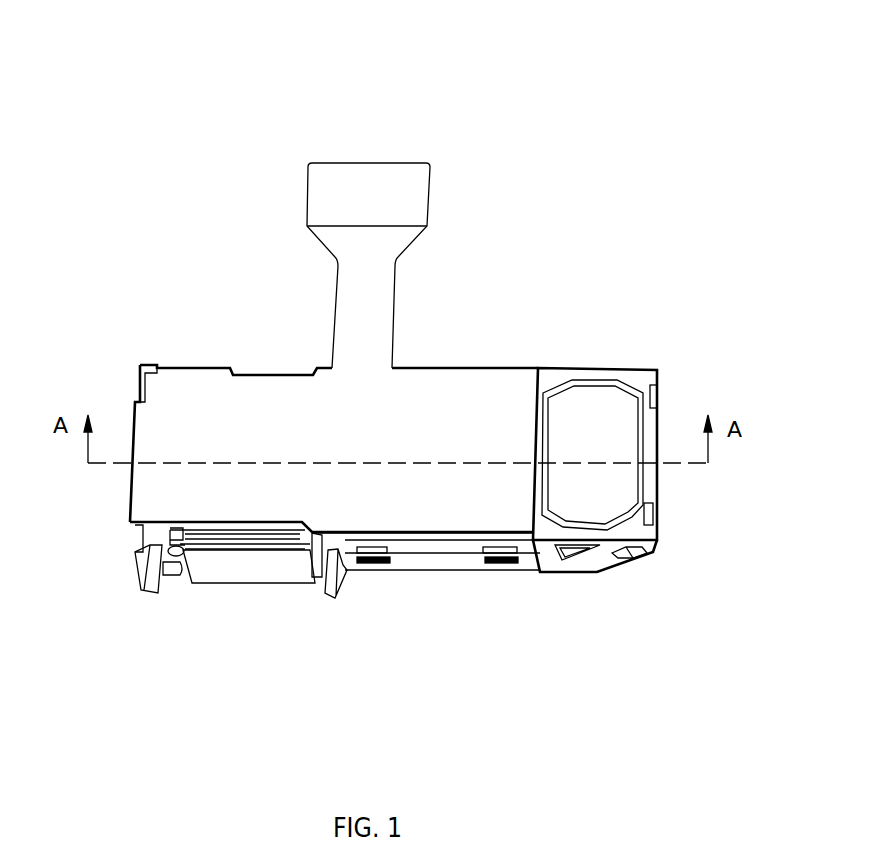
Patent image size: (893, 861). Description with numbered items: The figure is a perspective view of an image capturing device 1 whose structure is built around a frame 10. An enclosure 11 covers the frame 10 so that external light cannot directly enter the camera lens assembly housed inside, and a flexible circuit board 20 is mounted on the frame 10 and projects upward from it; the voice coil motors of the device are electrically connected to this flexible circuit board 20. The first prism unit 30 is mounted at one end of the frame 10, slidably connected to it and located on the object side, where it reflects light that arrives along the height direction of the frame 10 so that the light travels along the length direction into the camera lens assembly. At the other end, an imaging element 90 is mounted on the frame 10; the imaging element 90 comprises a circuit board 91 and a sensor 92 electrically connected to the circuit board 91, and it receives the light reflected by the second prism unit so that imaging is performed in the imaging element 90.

The image capturing device 1 is at (378, 43).
The frame 10 is at (570, 560).
The enclosure 11 is at (430, 560).
The flexible circuit board 20 is at (378, 292).
The first prism unit 30 is at (585, 405).
The imaging element 90 is at (241, 654).
The circuit board 91 is at (293, 545).
The sensor 92 is at (208, 540).